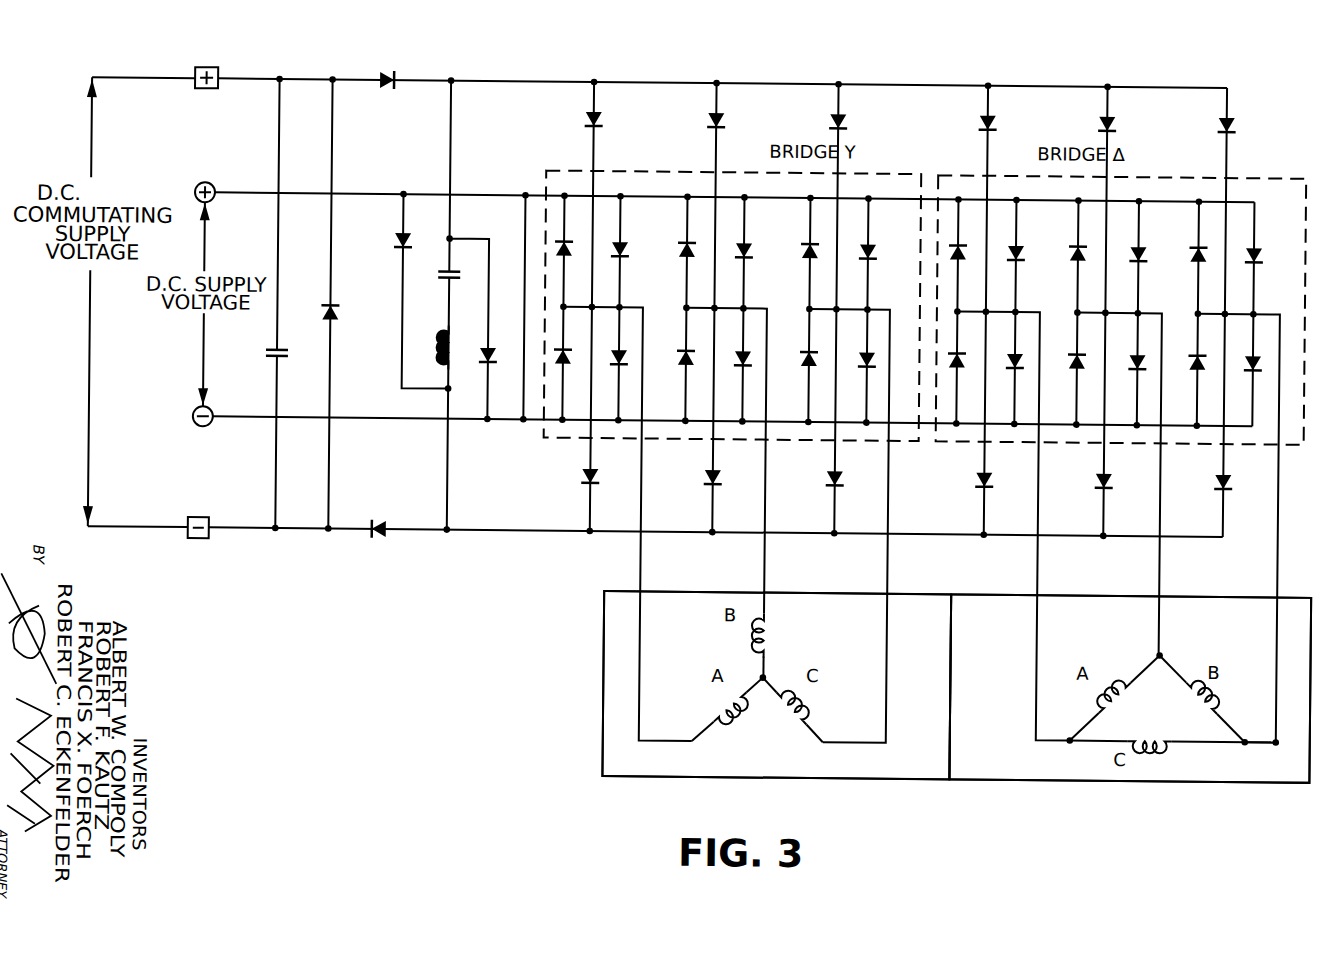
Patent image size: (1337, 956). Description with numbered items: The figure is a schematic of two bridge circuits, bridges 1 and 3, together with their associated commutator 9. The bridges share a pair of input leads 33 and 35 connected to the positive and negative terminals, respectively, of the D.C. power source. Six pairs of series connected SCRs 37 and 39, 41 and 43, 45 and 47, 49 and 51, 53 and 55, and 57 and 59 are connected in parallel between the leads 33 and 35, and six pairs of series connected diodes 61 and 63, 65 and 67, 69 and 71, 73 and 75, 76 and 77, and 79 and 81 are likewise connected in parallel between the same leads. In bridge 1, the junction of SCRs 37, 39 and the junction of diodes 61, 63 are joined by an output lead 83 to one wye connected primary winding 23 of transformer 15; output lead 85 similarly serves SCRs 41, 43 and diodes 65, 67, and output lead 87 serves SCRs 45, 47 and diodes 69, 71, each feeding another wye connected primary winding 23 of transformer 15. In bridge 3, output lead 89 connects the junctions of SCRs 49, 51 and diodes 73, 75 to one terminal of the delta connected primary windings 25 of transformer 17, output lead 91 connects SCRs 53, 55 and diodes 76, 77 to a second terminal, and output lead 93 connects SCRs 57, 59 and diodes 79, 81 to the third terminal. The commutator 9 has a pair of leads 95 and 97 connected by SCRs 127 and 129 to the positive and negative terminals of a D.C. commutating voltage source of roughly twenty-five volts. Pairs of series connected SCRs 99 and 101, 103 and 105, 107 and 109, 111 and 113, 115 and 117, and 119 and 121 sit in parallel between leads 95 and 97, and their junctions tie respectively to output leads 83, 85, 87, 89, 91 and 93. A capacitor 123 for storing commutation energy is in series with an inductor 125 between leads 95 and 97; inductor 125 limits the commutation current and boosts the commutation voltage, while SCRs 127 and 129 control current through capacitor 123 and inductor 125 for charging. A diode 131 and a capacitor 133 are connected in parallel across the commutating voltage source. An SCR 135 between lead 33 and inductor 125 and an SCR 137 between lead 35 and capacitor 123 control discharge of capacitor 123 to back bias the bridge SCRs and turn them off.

The bridge 1 is at (860, 169).
The bridge 3 is at (1245, 167).
The commutator 9 is at (933, 72).
The transformer 15 is at (814, 648).
The transformer 17 is at (1214, 644).
The wye connected primary winding 23 is at (756, 640).
The delta connected primary windings 25 is at (1116, 674).
The input lead 33 is at (470, 196).
The input lead 35 is at (468, 426).
The SCR 37 is at (630, 252).
The SCR 39 is at (631, 361).
The SCR 41 is at (753, 251).
The SCR 43 is at (752, 364).
The SCR 45 is at (875, 251).
The SCR 47 is at (862, 364).
The SCR 49 is at (1026, 251).
The SCR 51 is at (1010, 365).
The SCR 53 is at (1148, 250).
The SCR 55 is at (1131, 364).
The SCR 57 is at (1263, 249).
The SCR 59 is at (1250, 362).
The diode 61 is at (572, 246).
The diode 63 is at (574, 366).
The diode 65 is at (677, 253).
The diode 67 is at (680, 366).
The diode 69 is at (800, 253).
The diode 71 is at (802, 366).
The diode 73 is at (967, 255).
The diode 75 is at (967, 366).
The diode 76 is at (1068, 255).
The diode 77 is at (1071, 365).
The diode 79 is at (1188, 253).
The diode 81 is at (1191, 363).
The output lead 83 is at (650, 479).
The output lead 85 is at (772, 480).
The output lead 87 is at (897, 484).
The output lead 89 is at (1045, 480).
The output lead 91 is at (1164, 479).
The output lead 93 is at (1282, 487).
The lead 95 is at (778, 83).
The lead 97 is at (743, 535).
The SCR 99 is at (604, 127).
The SCR 101 is at (602, 479).
The SCR 103 is at (726, 127).
The SCR 105 is at (722, 479).
The SCR 107 is at (849, 128).
The SCR 109 is at (842, 480).
The SCR 111 is at (999, 125).
The SCR 113 is at (992, 480).
The SCR 115 is at (1119, 125).
The SCR 117 is at (1114, 479).
The SCR 119 is at (1236, 124).
The SCR 121 is at (1232, 478).
The capacitor 123 is at (429, 271).
The inductor 125 is at (436, 355).
The SCR 127 is at (390, 73).
The SCR 129 is at (383, 543).
The diode 131 is at (338, 319).
The capacitor 133 is at (296, 366).
The SCR 135 is at (392, 239).
The SCR 137 is at (480, 365).